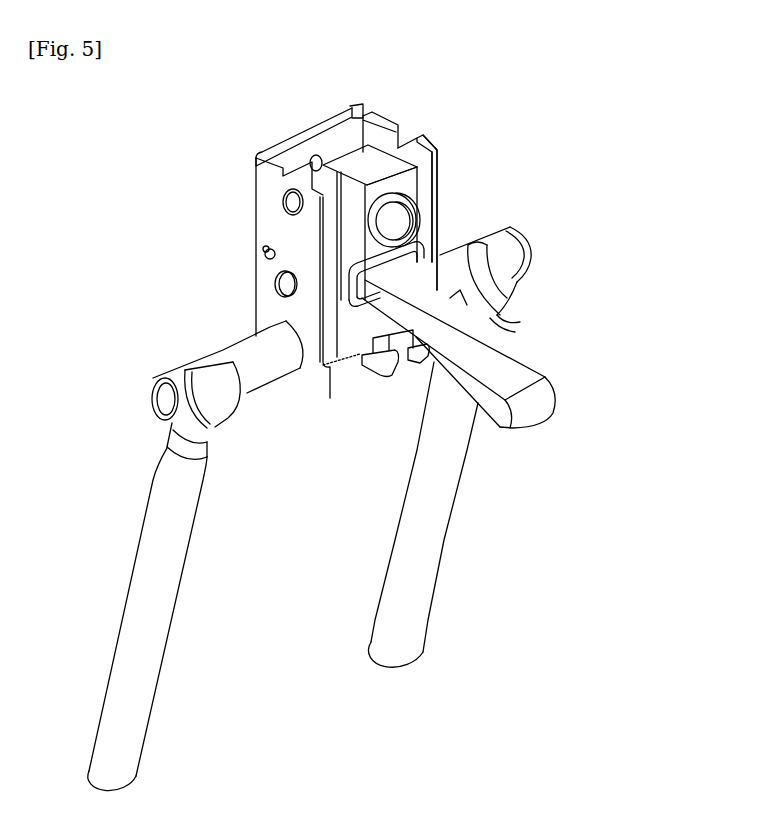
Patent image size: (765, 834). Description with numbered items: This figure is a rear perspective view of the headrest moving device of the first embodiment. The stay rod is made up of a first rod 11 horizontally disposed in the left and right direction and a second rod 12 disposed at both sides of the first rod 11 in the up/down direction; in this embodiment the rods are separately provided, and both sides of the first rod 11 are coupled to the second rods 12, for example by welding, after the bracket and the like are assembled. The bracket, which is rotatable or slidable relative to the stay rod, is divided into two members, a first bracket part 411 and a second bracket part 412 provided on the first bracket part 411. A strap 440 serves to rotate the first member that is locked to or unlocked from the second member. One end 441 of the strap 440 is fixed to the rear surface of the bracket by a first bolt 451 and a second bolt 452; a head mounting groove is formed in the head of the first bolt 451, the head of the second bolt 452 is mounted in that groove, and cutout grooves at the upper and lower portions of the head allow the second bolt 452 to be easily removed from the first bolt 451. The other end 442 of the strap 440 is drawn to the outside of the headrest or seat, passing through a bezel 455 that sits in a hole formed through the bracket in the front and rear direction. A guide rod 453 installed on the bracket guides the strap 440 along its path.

The first rod 11 is at (248, 355).
The second rod 12 is at (167, 537).
The first bracket part 411 is at (267, 182).
The second bracket part 412 is at (434, 139).
The strap 440 is at (545, 347).
The one end of the strap 441 is at (403, 187).
The other end of the strap 442 is at (540, 393).
The first bolt 451 is at (396, 200).
The second bolt 452 is at (400, 226).
The guide rod 453 is at (398, 145).
The bezel 455 is at (366, 302).